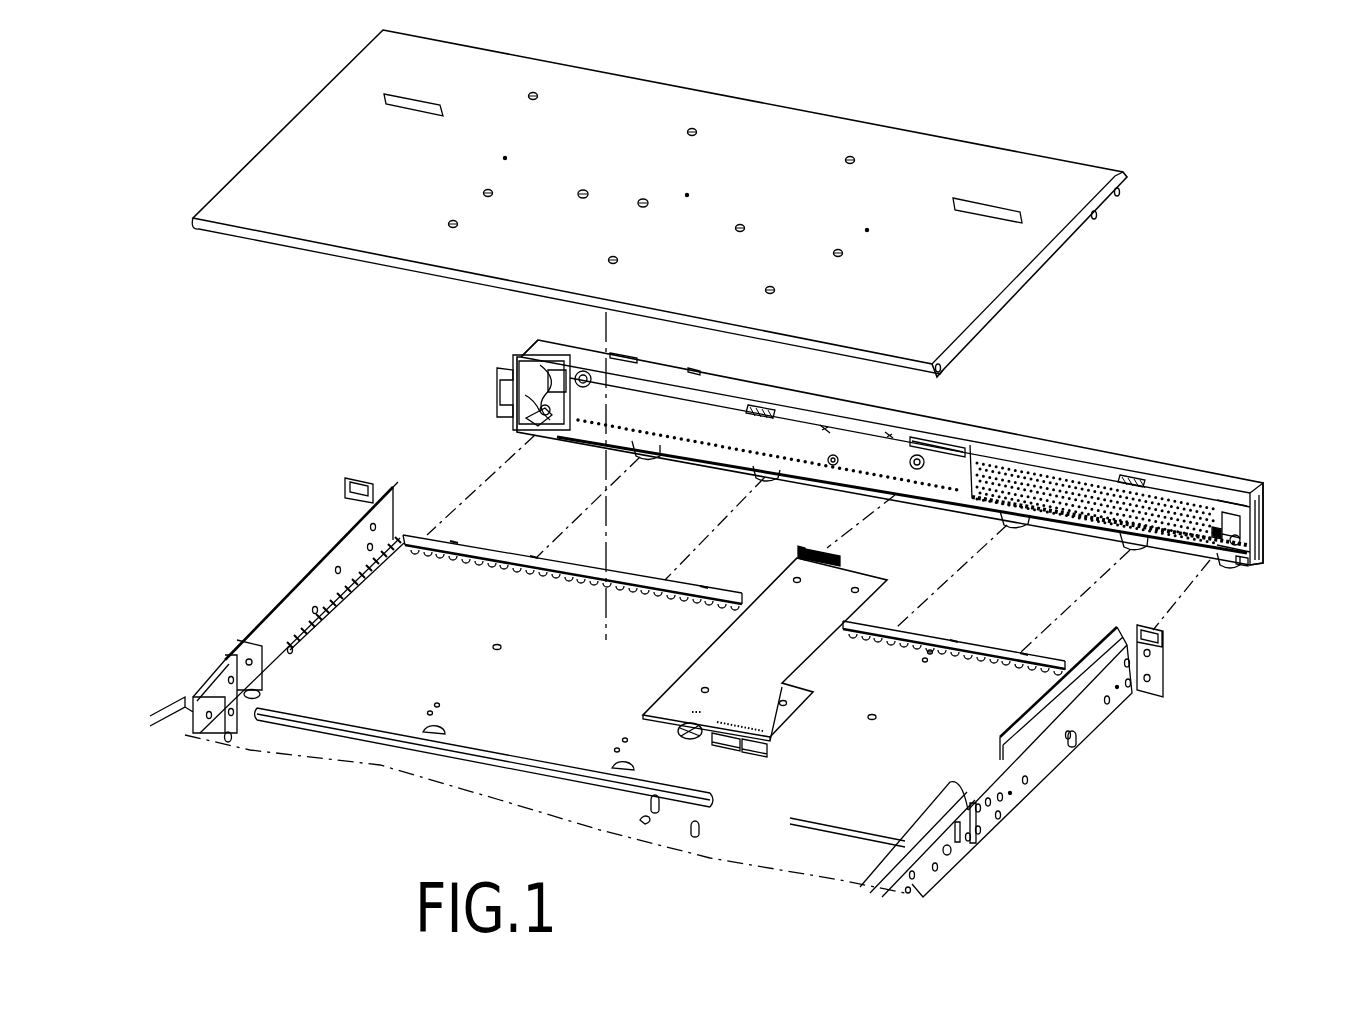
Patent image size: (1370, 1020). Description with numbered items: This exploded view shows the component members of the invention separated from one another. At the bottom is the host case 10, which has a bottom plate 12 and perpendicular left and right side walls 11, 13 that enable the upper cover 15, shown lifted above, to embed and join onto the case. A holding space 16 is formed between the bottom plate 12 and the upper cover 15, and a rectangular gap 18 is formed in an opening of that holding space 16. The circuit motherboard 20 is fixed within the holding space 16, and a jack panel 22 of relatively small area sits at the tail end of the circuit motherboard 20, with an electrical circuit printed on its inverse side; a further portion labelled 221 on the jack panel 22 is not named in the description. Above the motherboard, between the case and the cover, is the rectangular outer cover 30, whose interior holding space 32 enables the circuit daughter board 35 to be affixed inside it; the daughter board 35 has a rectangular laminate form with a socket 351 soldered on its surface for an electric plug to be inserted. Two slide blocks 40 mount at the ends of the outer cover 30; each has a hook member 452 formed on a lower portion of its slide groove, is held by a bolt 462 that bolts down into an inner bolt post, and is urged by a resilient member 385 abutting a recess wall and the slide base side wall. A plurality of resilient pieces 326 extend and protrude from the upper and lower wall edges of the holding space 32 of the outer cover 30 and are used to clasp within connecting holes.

The host case 10 is at (656, 687).
The left side wall 11 is at (270, 633).
The bottom plate 12 is at (370, 633).
The right side wall 13 is at (1057, 757).
The upper cover 15 is at (815, 132).
The holding space 16 is at (450, 575).
The rectangular gap 18 is at (560, 563).
The circuit motherboard 20 is at (786, 636).
The jack panel 22 is at (825, 541).
The connector terminal portion 221 is at (807, 552).
The rectangular outer cover 30 is at (876, 472).
The holding space 32 is at (1060, 447).
The circuit daughter board 35 is at (702, 408).
The resilient pieces 326 is at (762, 410).
The socket 351 is at (932, 445).
The resilient member 385 is at (552, 378).
The slide block 40 is at (876, 455).
The hook member 452 is at (530, 430).
The bolt 462 is at (550, 410).